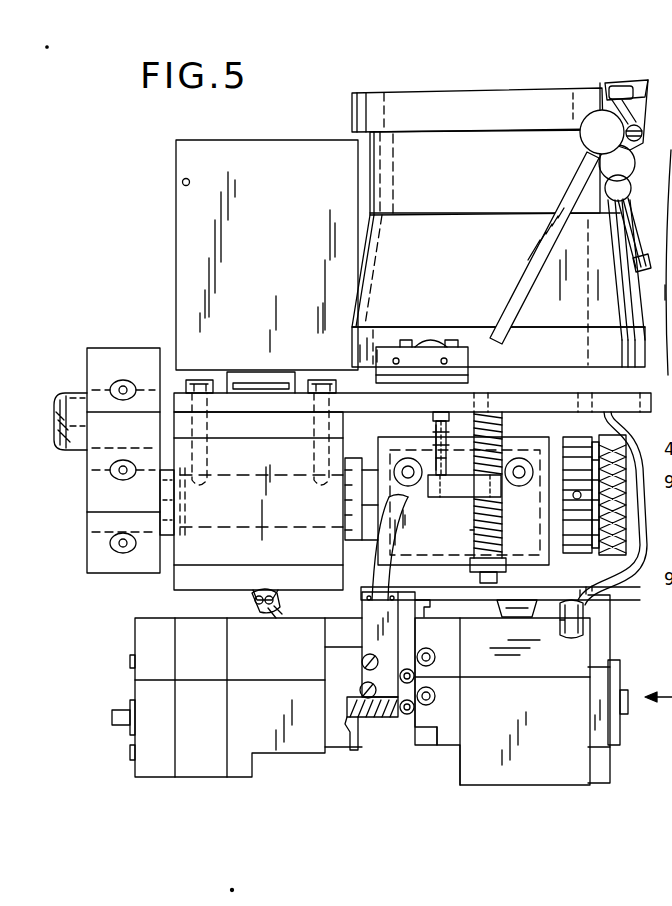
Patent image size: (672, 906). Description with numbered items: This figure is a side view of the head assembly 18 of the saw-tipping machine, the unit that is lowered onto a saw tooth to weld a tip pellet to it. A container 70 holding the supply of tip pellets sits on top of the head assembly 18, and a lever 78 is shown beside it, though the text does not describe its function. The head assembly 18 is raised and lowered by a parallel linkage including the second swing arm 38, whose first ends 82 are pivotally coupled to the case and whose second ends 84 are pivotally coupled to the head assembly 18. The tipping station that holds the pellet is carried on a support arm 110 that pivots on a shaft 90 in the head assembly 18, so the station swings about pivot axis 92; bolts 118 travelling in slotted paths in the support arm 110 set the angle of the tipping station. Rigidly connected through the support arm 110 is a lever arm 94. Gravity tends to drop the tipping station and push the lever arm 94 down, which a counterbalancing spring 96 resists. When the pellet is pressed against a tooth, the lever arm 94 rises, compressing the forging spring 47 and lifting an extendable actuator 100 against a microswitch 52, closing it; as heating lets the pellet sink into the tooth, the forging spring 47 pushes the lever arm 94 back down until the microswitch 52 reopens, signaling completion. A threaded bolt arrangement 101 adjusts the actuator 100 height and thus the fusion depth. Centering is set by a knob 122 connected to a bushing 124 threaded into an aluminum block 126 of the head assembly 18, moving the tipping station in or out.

The head assembly 18 is at (138, 276).
The second swing arm 38 is at (110, 435).
The first ends 82 is at (86, 378).
The second ends 84 is at (84, 524).
The container 70 is at (498, 227).
The lever handle 78 is at (570, 212).
The microswitch 52 is at (470, 366).
The knob 122 is at (610, 422).
The shaft 90 is at (372, 465).
The extendable actuator 100 is at (425, 412).
The threaded bolt arrangement 101 is at (421, 452).
The lever arm 94 is at (464, 486).
The forging spring 47 is at (500, 420).
The counterbalancing spring 96 is at (470, 532).
The bushing 124 is at (524, 460).
The aluminum block 126 is at (548, 462).
The pivot axis 92 is at (645, 500).
The support arm 110 is at (600, 621).
The bolts 118 is at (612, 665).